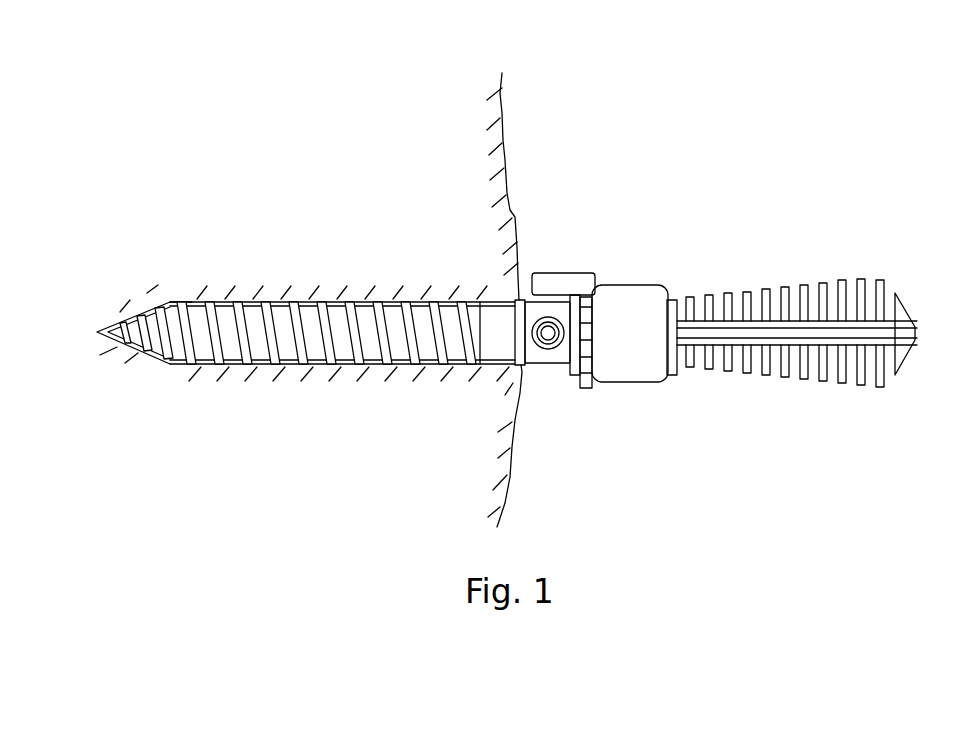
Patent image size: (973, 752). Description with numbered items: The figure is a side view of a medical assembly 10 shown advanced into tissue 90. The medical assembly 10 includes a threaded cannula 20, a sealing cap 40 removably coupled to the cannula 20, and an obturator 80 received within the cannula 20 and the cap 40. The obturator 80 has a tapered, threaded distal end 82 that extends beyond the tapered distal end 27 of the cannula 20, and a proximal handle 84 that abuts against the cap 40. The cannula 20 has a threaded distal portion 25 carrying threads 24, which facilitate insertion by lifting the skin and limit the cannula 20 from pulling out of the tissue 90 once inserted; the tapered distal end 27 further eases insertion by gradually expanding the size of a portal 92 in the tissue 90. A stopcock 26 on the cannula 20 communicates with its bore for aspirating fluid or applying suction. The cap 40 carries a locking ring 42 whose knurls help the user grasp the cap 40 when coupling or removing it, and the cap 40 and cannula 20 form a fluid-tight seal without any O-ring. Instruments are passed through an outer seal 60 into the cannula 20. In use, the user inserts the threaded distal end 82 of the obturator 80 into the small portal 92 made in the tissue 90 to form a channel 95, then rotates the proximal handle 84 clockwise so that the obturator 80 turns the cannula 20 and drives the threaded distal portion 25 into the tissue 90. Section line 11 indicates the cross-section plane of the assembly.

The medical assembly 10 is at (565, 190).
The section line 11 is at (88, 339).
The threaded cannula 20 is at (310, 368).
The threads 24 is at (262, 368).
The threaded distal portion 25 is at (369, 368).
The stopcock 26 is at (566, 273).
The tapered distal end 27 is at (180, 300).
The sealing cap 40 is at (635, 373).
The locking ring 42 is at (590, 392).
The outer seal 60 is at (630, 302).
The obturator 80 is at (158, 373).
The tapered, threaded distal end 82 is at (128, 352).
The proximal handle 84 is at (781, 373).
The tissue 90 is at (443, 186).
The portal 92 is at (528, 372).
The channel 95 is at (461, 370).